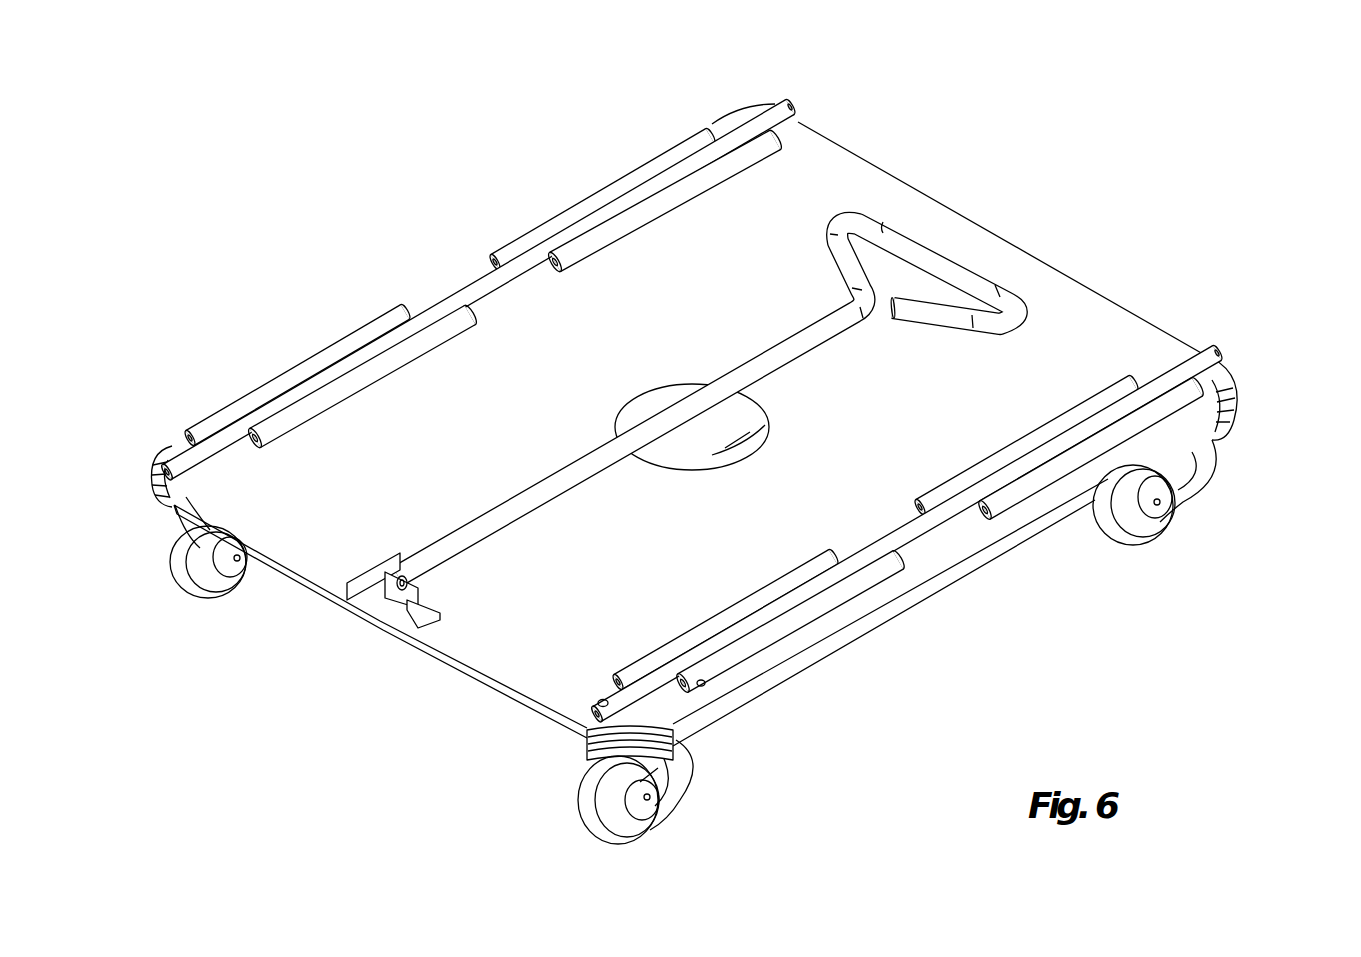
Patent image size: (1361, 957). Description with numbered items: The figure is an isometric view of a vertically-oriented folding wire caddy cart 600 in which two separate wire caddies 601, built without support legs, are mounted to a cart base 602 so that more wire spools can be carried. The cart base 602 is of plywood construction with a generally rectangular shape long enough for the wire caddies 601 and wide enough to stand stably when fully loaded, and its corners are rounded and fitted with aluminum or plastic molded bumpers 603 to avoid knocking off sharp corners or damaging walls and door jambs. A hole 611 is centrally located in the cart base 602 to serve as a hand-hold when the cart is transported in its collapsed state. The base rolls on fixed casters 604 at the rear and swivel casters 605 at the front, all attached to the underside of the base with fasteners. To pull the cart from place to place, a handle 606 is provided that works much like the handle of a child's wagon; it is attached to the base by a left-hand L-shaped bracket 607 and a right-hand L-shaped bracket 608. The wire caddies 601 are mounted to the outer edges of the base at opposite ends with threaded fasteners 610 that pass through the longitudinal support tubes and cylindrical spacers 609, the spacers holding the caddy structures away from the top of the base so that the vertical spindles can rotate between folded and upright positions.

The wire caddy cart 600 is at (404, 198).
The wire caddies 601 is at (593, 197).
The cart base 602 is at (1094, 292).
The bumpers 603 is at (1240, 400).
The fixed casters 604 is at (1152, 537).
The swivel casters 605 is at (667, 797).
The handle 606 is at (953, 250).
The left-hand L-shaped bracket 607 is at (364, 598).
The right-hand L-shaped bracket 608 is at (402, 598).
The cylindrical spacers 609 is at (176, 512).
The threaded fasteners 610 is at (174, 441).
The hole 611 is at (632, 392).